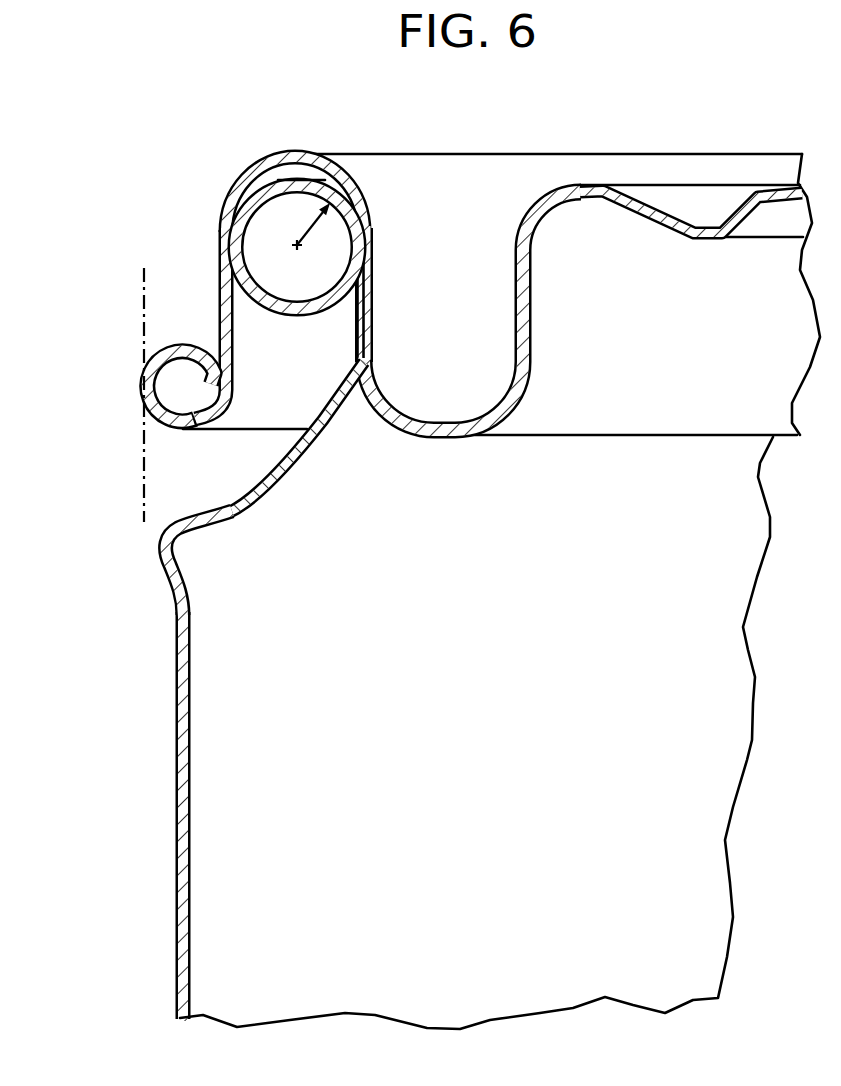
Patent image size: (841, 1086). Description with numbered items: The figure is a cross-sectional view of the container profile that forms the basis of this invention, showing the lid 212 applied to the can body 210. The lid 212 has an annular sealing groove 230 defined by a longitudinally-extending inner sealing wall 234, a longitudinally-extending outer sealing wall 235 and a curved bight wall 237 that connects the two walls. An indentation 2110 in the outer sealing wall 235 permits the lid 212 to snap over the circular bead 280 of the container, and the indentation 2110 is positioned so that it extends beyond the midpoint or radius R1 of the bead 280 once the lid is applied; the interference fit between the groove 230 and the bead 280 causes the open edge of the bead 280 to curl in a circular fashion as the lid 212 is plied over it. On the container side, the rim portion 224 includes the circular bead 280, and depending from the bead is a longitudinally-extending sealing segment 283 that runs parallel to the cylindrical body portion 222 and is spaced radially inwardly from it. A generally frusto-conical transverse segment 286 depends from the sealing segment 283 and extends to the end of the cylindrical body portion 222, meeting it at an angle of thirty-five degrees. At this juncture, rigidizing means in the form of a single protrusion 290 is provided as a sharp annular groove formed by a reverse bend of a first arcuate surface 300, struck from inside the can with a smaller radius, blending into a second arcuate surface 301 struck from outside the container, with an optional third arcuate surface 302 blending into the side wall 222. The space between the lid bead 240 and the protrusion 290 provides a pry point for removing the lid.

The can body 210 is at (396, 648).
The lid 212 is at (640, 151).
The cylindrical body portion 222 is at (166, 846).
The rim portion 224 is at (229, 468).
The annular sealing groove 230 is at (420, 258).
The inner sealing wall 234 is at (370, 295).
The outer sealing wall 235 is at (221, 258).
The curved bight wall 237 is at (300, 157).
The lid bead 240 is at (134, 356).
The circular bead 280 is at (274, 180).
The sealing segment 283 is at (355, 320).
The frusto-conical transverse segment 286 is at (308, 448).
The protrusion 290 is at (148, 590).
The first arcuate surface 300 is at (174, 553).
The second arcuate surface 301 is at (210, 503).
The third arcuate surface 302 is at (170, 600).
The indentation 2110 is at (240, 294).
The radius of bead R1 is at (310, 231).